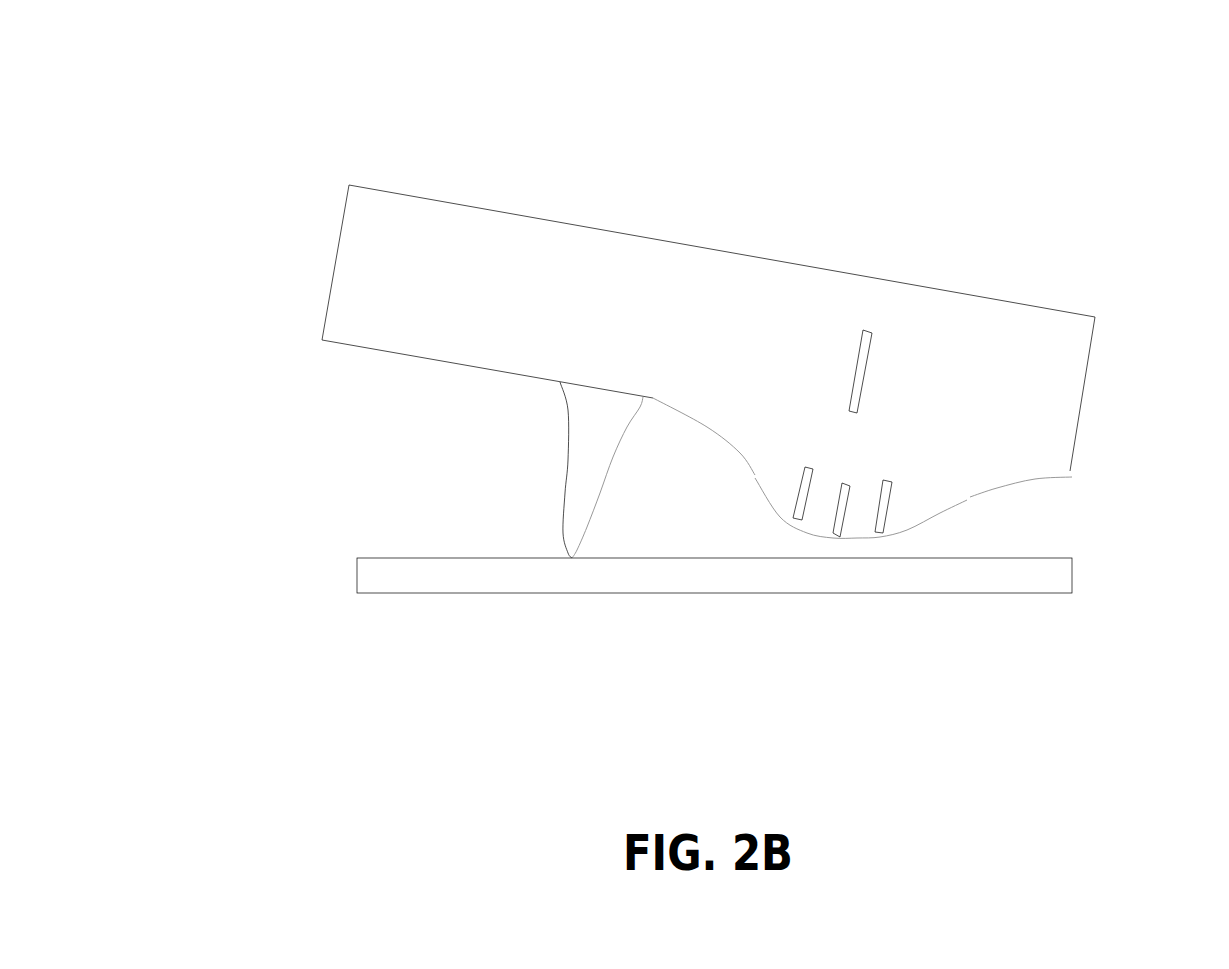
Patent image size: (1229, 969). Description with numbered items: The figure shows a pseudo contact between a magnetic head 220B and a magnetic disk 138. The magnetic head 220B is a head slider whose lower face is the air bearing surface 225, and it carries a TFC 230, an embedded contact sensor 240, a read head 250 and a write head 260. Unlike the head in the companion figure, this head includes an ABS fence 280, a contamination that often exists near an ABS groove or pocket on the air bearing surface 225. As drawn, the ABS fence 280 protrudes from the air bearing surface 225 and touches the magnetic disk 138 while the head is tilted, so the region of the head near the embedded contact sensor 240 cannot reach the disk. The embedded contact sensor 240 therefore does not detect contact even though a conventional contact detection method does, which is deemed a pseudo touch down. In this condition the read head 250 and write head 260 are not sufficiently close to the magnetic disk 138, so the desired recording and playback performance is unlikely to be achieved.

The magnetic head 220B is at (417, 197).
The TFC 230 is at (872, 332).
The write head 260 is at (893, 497).
The air bearing surface 225 is at (508, 380).
The ABS fence 280 is at (560, 495).
The read head 250 is at (803, 520).
The embedded contact sensor 240 is at (835, 538).
The magnetic disk 138 is at (365, 593).